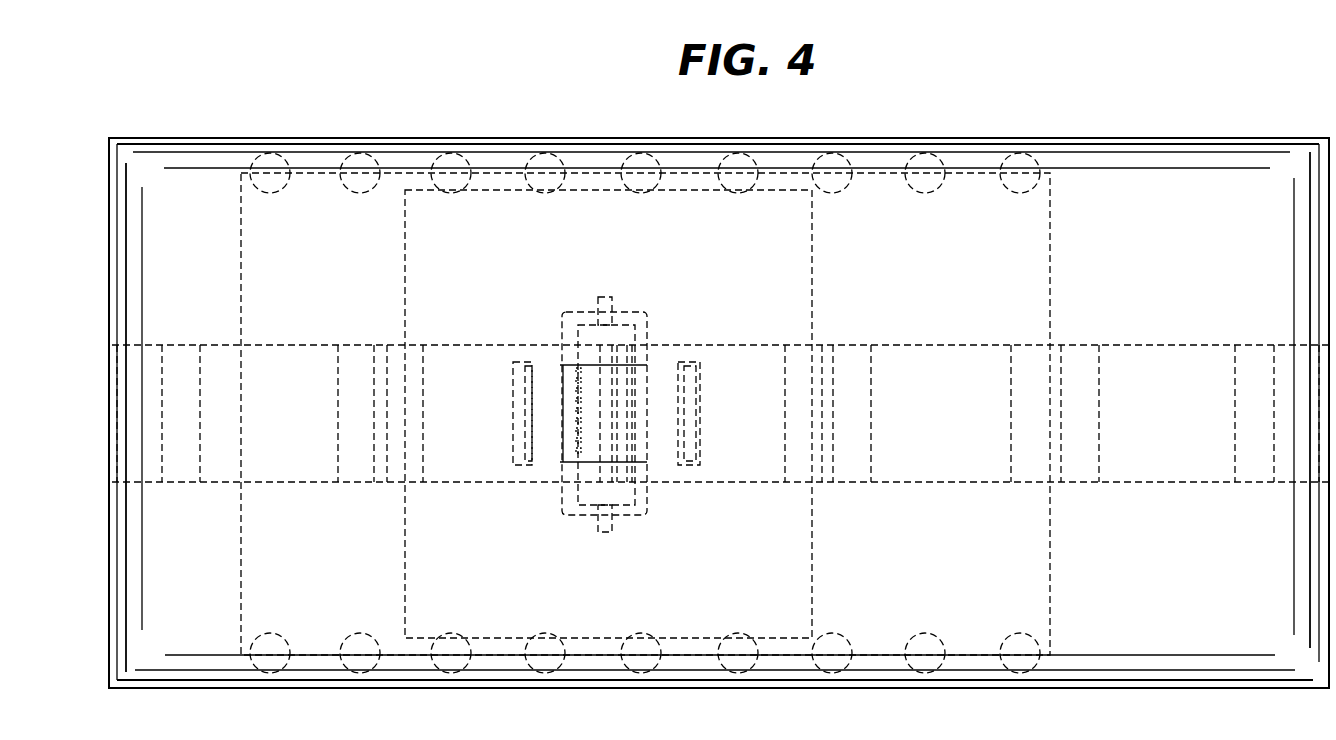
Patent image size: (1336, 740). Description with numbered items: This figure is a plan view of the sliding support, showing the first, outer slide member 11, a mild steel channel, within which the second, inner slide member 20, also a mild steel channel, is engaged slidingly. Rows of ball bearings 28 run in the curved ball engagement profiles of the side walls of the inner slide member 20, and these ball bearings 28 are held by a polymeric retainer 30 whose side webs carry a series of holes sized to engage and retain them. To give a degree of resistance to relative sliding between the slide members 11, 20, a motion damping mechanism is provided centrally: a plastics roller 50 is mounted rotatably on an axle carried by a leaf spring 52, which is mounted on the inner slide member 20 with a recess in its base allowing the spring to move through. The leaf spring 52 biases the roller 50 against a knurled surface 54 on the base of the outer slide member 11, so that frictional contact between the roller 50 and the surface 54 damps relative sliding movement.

The first, outer slide member 11 is at (1217, 178).
The second, inner slide member 20 is at (780, 205).
The ball bearings 28 is at (270, 152).
The retainer 30 is at (982, 205).
The roller 50 is at (593, 503).
The leaf spring 52 is at (665, 368).
The knurled surface 54 is at (1166, 360).